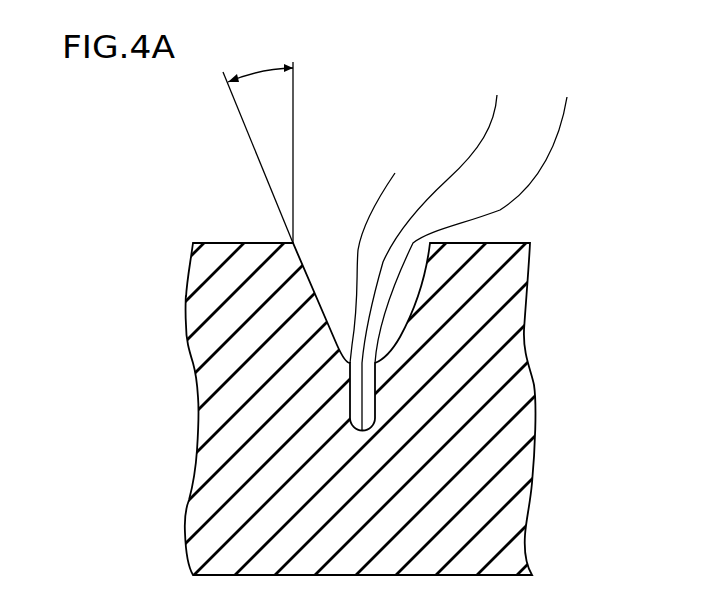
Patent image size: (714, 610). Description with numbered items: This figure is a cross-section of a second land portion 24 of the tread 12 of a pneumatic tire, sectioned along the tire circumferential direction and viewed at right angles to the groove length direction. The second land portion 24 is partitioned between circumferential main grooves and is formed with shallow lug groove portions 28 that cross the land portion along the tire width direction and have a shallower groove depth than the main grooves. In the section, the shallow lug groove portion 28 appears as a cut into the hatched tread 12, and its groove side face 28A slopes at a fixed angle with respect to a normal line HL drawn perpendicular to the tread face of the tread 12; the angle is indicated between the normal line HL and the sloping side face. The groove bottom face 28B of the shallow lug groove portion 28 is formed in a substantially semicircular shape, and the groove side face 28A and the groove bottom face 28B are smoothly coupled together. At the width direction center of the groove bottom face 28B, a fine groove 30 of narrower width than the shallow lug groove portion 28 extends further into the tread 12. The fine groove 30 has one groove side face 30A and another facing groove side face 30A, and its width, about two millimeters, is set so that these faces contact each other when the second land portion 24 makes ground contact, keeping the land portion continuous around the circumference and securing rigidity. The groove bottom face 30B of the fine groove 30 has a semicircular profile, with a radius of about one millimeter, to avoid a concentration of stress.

The tread 12 is at (513, 243).
The second land portion 24 is at (228, 243).
The shallow lug groove portion 28 is at (452, 150).
The groove side face 28A is at (302, 260).
The groove bottom face 28B is at (396, 254).
The fine groove 30 is at (615, 73).
The groove side face 30A is at (446, 247).
The groove bottom face 30B is at (490, 214).
The normal line HL is at (293, 88).